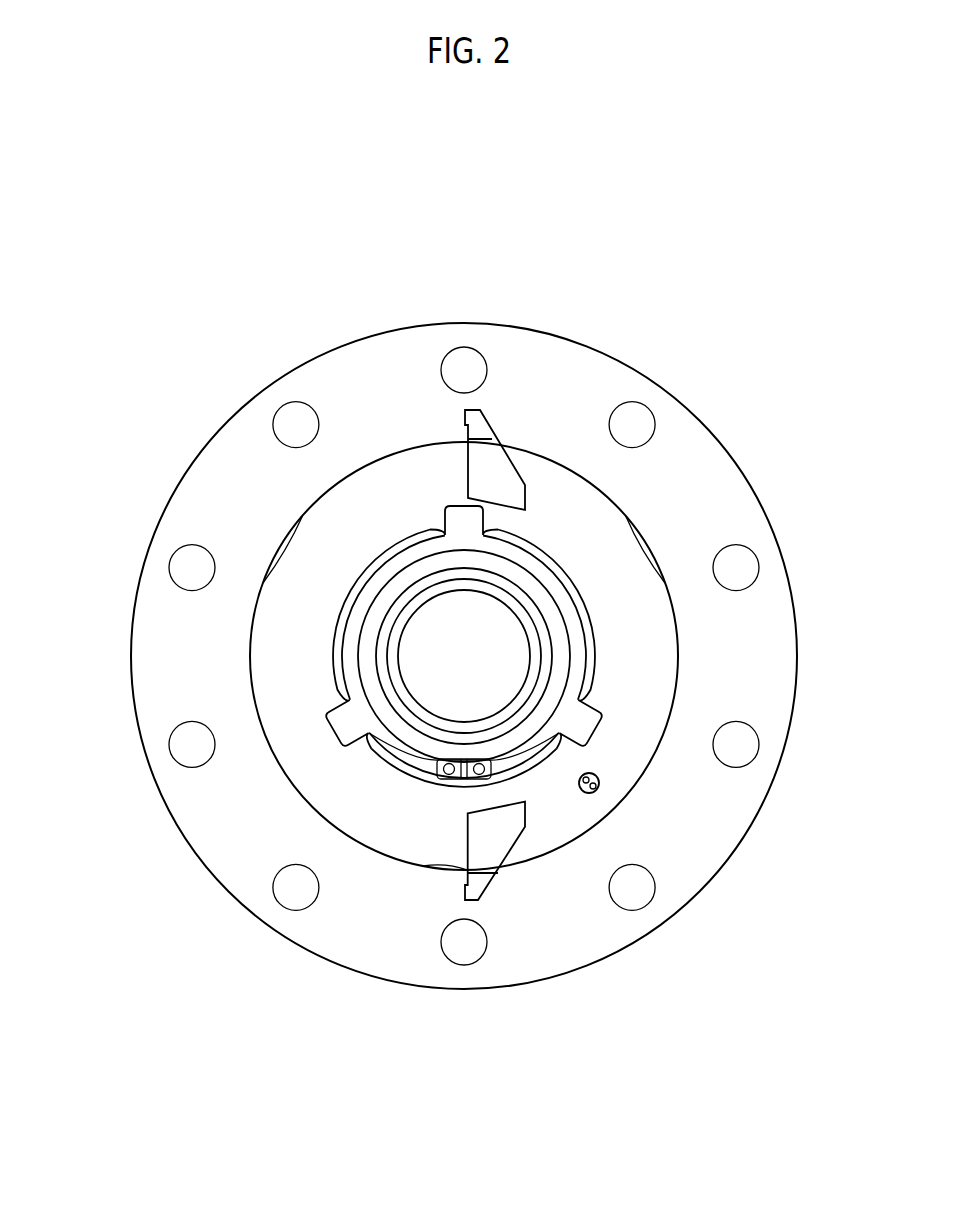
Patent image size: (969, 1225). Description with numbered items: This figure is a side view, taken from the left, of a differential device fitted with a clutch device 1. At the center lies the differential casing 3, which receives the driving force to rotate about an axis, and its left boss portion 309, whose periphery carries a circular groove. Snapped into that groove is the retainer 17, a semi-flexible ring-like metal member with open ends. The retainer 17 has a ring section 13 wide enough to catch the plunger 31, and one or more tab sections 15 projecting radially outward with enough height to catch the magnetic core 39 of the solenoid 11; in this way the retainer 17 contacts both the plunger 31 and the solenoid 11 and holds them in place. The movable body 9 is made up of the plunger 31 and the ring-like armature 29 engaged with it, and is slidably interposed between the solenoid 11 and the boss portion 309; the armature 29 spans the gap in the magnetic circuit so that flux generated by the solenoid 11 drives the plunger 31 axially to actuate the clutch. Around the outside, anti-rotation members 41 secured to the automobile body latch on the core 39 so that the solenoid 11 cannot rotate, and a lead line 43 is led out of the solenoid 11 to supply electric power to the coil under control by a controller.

The clutch device 1 is at (474, 236).
The differential casing 3 is at (378, 331).
The movable body 9 is at (399, 535).
The solenoid 11 is at (688, 660).
The ring section 13 is at (562, 605).
The tab sections 15 is at (472, 517).
The retainer 17 is at (542, 561).
The armature 29 is at (342, 618).
The plunger 31 is at (350, 658).
The magnetic core 39 is at (397, 833).
The anti-rotation members 41 is at (497, 430).
The lead line 43 is at (600, 783).
The boss portion 309 is at (545, 654).